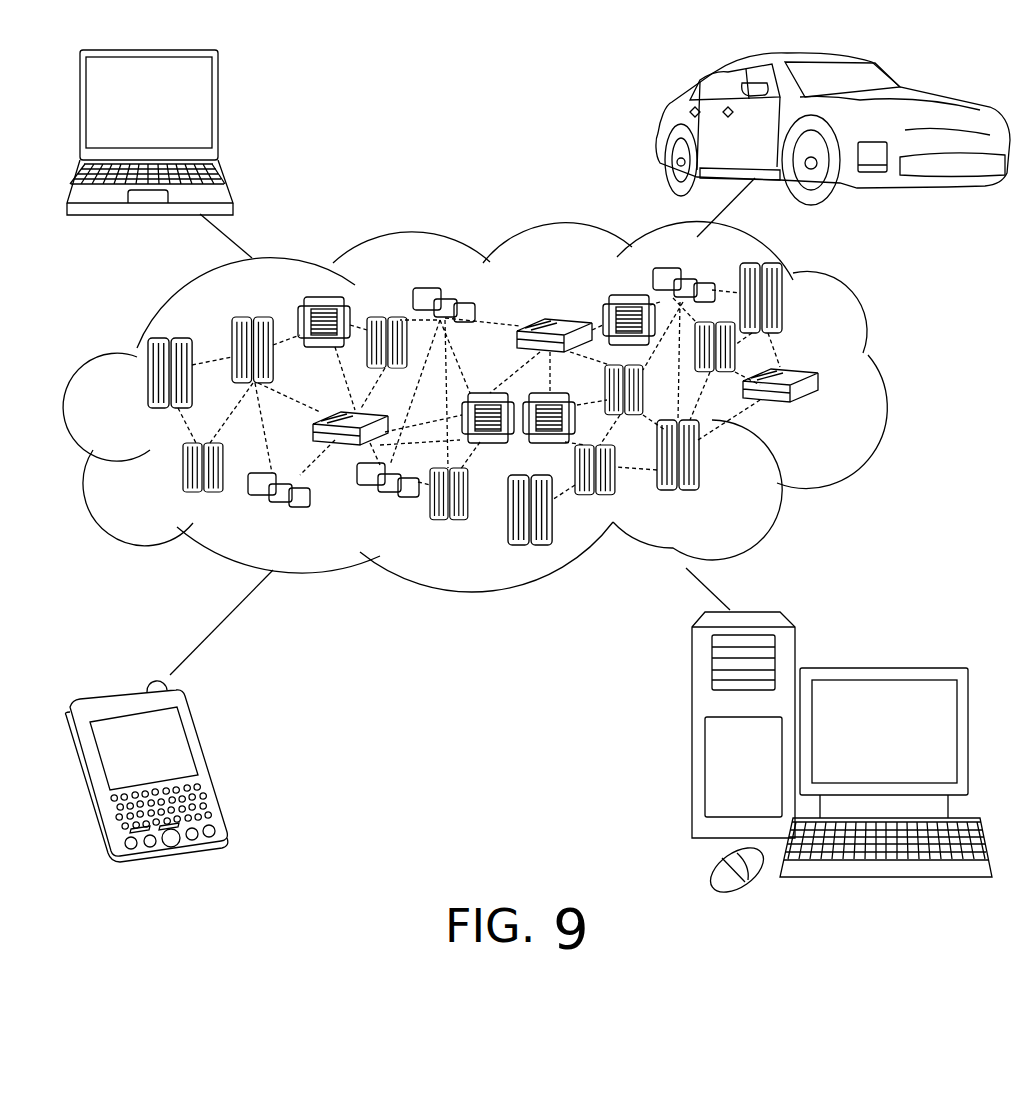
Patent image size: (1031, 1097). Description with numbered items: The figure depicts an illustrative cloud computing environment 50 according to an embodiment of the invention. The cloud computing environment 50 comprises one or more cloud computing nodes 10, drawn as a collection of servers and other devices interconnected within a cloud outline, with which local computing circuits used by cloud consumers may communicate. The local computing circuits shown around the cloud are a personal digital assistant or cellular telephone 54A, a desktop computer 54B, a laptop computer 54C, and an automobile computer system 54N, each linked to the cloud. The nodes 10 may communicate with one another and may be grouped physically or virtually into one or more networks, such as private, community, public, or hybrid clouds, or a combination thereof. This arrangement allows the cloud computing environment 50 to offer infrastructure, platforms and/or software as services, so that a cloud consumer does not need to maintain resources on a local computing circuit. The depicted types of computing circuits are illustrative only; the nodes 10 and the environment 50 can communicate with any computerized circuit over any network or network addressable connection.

The cloud computing nodes 10 is at (823, 412).
The cloud computing environment 50 is at (882, 388).
The personal digital assistant (PDA) or cellular telephone 54A is at (207, 762).
The desktop computer 54B is at (880, 667).
The laptop computer 54C is at (219, 114).
The automobile computer system 54N is at (660, 130).